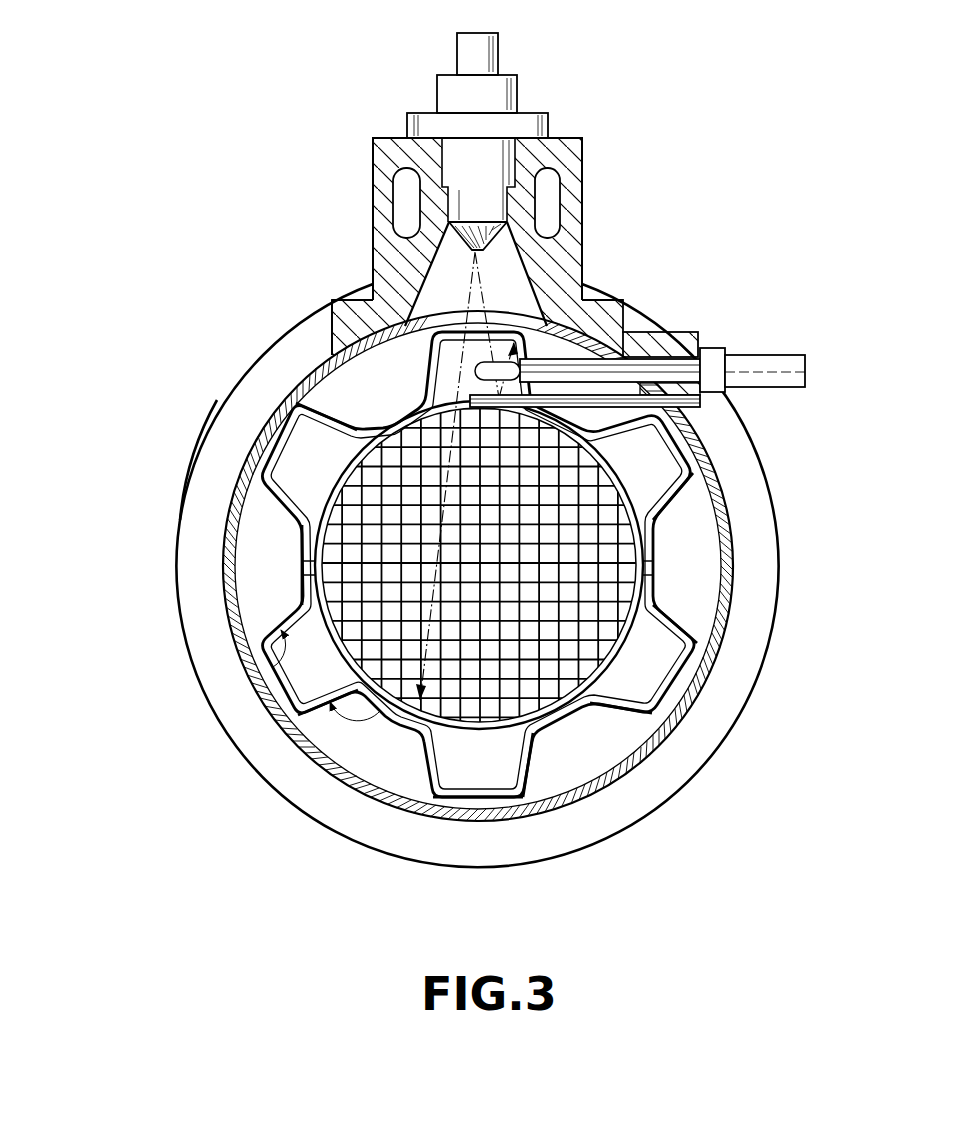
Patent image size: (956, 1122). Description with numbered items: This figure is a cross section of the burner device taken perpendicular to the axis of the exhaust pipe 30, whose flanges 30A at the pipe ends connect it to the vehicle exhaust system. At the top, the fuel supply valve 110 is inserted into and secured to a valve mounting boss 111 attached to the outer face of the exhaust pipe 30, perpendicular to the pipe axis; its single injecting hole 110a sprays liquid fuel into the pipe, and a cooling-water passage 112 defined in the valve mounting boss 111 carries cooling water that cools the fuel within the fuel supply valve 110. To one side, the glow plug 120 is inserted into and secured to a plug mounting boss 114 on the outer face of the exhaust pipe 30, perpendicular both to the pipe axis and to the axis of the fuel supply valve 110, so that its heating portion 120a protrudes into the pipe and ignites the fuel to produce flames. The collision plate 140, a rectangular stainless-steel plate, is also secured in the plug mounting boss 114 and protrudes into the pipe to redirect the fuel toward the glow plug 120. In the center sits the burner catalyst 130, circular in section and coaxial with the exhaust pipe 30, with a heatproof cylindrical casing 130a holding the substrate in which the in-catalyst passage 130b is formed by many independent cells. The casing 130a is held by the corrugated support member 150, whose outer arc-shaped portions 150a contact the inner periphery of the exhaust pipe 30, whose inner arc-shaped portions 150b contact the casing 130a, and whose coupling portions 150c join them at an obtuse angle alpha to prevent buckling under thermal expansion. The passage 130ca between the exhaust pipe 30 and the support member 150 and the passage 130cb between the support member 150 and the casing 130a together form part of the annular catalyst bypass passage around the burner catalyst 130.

The exhaust pipe 30 is at (298, 777).
The flanges 30A is at (212, 648).
The fuel supply valve 110 is at (498, 53).
The injecting hole 110a is at (470, 250).
The valve mounting boss 111 is at (567, 157).
The cooling-water passage 112 is at (550, 207).
The plug mounting boss 114 is at (690, 335).
The glow plug 120 is at (663, 370).
The heating portion 120a is at (333, 343).
The burner catalyst 130 is at (392, 459).
The cylindrical casing 130a is at (326, 477).
The in-catalyst passage 130b is at (363, 441).
The passage 130ca is at (283, 550).
The passage 130cb is at (303, 677).
The collision plate 140 is at (745, 388).
The support member 150 is at (683, 513).
The outer arc-shaped portion 150a is at (673, 680).
The inner arc-shaped portion 150b is at (567, 707).
The coupling portion 150c is at (617, 703).